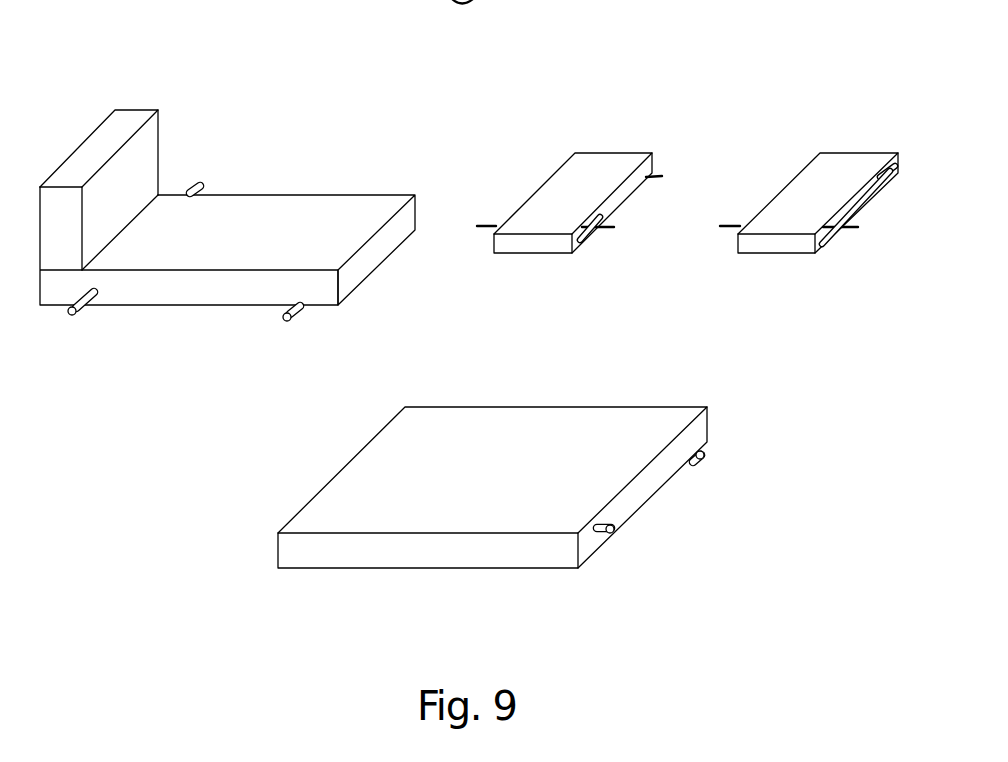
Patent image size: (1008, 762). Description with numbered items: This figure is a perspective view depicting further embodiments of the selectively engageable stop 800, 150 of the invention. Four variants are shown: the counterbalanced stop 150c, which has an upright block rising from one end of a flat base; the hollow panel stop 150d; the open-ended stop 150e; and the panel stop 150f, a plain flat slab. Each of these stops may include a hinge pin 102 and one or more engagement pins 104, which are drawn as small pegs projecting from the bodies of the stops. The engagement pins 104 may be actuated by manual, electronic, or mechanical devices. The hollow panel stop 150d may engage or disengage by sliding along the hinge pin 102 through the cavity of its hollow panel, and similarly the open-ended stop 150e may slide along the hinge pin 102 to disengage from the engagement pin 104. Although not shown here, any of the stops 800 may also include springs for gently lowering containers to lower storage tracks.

The selectively engageable stop 800 is at (90, 58).
The selectively engageable stop 150 is at (466, 288).
The counterbalanced stop 150c is at (267, 193).
The hollow panel stop 150d is at (617, 152).
The open-ended stop 150e is at (850, 152).
The panel stop 150f is at (508, 406).
The hinge pin 102 is at (70, 316).
The engagement pin 104 is at (286, 322).